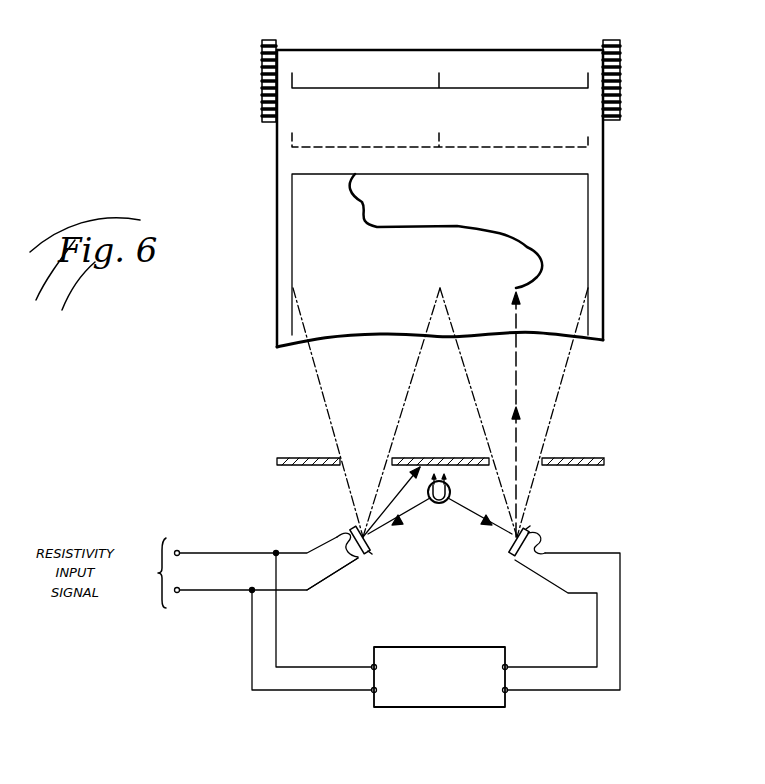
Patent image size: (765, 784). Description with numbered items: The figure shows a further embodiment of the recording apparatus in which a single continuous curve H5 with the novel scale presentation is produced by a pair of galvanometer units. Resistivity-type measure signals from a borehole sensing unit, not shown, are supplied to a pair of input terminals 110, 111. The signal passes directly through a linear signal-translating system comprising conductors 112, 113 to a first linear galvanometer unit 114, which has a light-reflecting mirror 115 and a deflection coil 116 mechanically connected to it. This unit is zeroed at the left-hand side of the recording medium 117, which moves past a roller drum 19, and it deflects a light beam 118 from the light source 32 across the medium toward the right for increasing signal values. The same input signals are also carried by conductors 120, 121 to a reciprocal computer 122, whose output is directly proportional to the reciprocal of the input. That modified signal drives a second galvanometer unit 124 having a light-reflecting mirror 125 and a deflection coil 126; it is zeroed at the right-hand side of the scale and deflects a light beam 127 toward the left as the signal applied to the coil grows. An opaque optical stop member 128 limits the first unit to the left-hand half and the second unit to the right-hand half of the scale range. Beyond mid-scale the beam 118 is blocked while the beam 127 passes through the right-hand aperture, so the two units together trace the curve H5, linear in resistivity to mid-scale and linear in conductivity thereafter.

The roller drum 19 is at (263, 40).
The recording medium 117 is at (276, 226).
The curve H5 is at (470, 228).
The light beam 127 is at (519, 357).
The optical stop member 128 is at (604, 462).
The light source 32 is at (450, 492).
The light beam 118 is at (400, 496).
The linear galvanometer unit 114 is at (380, 591).
The light-reflecting mirror 115 is at (372, 549).
The deflection coil 116 is at (330, 545).
The second galvanometer unit 124 is at (513, 592).
The light-reflecting mirror 125 is at (530, 528).
The deflection coil 126 is at (557, 553).
The input terminal 110 is at (177, 551).
The input terminal 111 is at (177, 592).
The conductor 112 is at (265, 553).
The conductor 113 is at (293, 592).
The conductor 120 is at (318, 666).
The conductor 121 is at (318, 691).
The reciprocal computer 122 is at (437, 708).